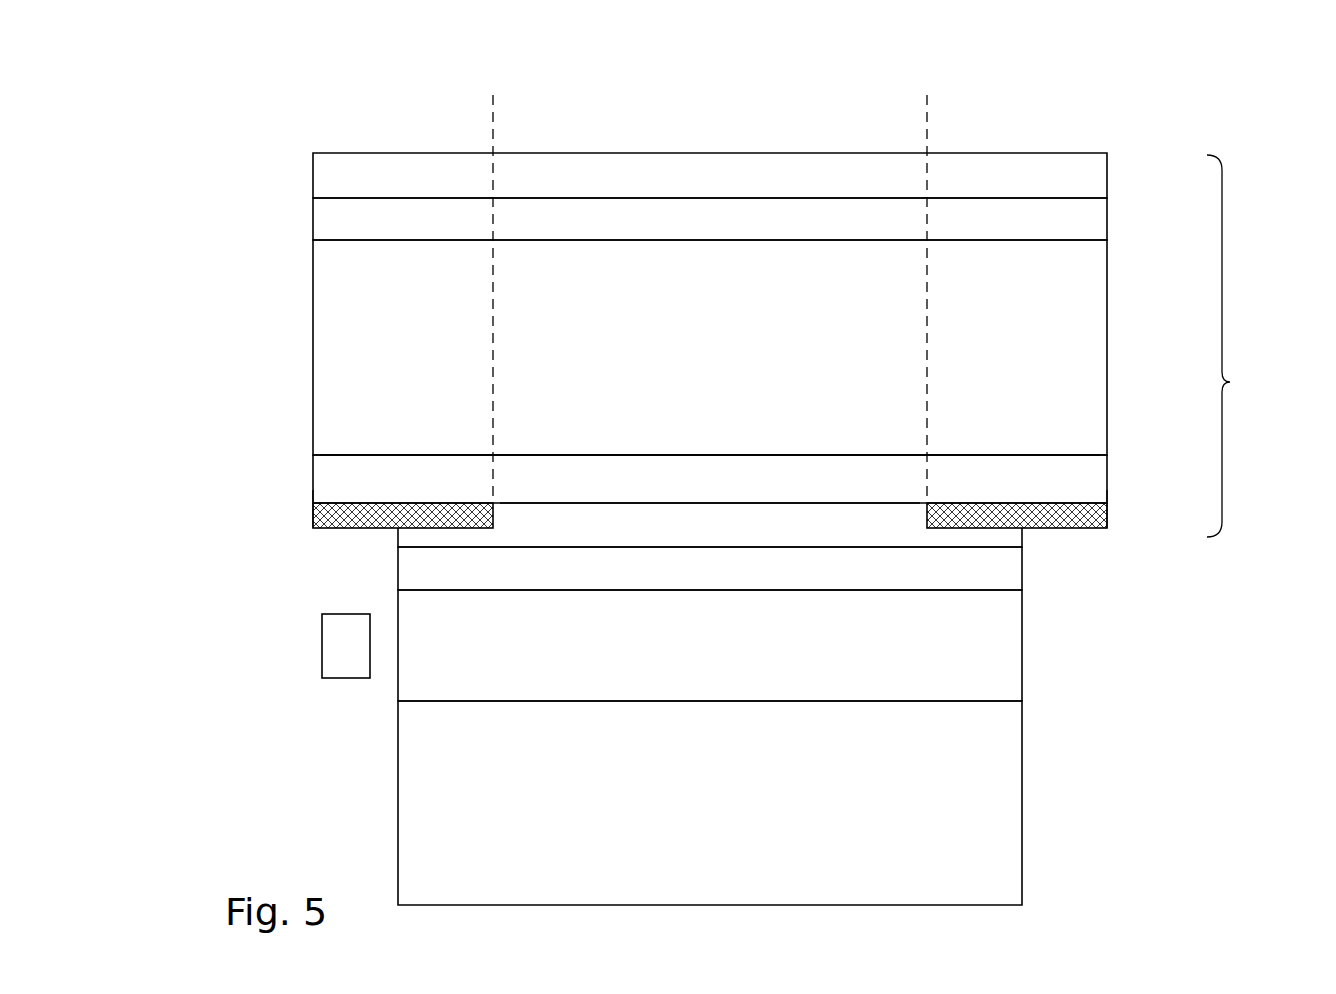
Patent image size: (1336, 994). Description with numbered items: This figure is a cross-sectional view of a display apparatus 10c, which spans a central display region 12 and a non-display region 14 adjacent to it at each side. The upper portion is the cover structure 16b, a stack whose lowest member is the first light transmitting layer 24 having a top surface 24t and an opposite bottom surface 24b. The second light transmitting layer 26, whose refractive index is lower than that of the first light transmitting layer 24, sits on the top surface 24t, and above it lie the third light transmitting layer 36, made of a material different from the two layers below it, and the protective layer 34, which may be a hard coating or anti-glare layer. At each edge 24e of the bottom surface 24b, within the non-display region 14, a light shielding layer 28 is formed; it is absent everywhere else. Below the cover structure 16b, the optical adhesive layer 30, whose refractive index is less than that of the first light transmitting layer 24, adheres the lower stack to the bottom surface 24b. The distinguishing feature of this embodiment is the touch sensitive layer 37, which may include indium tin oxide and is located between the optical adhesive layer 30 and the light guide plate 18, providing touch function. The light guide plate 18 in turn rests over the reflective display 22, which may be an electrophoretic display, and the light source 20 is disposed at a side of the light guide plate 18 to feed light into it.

The display apparatus 10c is at (237, 42).
The display region 12 is at (702, 128).
The non-display region 14 is at (442, 128).
The cover structure 16b is at (1244, 346).
The light guide plate 18 is at (1010, 655).
The light source 20 is at (336, 648).
The reflective display 22 is at (1000, 791).
The first light transmitting layer 24 is at (1093, 474).
The top surface 24t is at (1068, 455).
The bottom surface 24b is at (518, 503).
The edge 24e is at (362, 503).
The second light transmitting layer 26 is at (1093, 362).
The light shielding layer 28 is at (1093, 514).
The optical adhesive layer 30 is at (1010, 537).
The protective layer 34 is at (1093, 181).
The third light transmitting layer 36 is at (1093, 223).
The touch sensitive layer 37 is at (1010, 568).